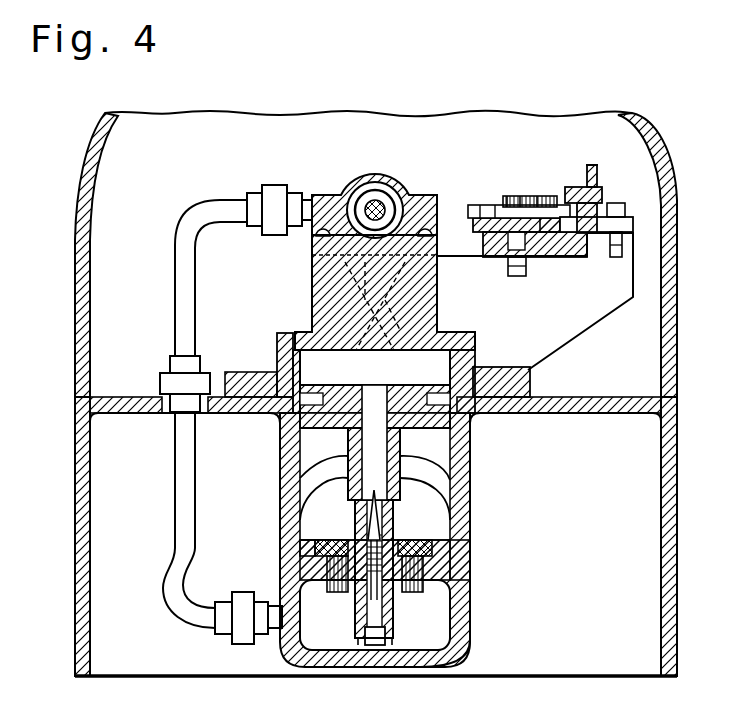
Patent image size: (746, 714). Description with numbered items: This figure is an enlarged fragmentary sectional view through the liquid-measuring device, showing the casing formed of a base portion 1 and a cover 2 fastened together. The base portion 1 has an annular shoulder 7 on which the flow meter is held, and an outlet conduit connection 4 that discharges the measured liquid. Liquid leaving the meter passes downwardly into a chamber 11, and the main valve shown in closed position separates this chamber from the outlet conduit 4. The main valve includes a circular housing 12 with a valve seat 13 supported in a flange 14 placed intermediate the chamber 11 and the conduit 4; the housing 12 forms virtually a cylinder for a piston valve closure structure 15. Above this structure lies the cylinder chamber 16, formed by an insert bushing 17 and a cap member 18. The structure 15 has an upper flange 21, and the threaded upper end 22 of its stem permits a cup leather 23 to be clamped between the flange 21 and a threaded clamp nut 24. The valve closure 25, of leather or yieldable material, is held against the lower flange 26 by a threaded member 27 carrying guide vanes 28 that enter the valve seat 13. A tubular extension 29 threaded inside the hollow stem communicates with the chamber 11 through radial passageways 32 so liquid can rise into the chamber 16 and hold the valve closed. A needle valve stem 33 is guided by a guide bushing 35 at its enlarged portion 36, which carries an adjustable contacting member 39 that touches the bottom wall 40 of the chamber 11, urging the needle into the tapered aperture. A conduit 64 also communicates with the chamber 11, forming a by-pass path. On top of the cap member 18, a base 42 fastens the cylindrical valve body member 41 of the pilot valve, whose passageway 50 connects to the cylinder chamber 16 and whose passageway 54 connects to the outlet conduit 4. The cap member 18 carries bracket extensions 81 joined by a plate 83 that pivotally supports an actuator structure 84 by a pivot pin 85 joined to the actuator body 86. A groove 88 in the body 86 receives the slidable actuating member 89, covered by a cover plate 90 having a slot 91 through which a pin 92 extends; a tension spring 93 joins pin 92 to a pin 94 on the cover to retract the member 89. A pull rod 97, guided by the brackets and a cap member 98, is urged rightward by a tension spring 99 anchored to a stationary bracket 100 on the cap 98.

The base portion 1 is at (680, 478).
The cover 2 is at (680, 318).
The outlet conduit connection 4 is at (430, 500).
The annular shoulder 7 is at (575, 417).
The chamber 11 is at (434, 636).
The circular housing 12 is at (472, 482).
The valve seat 13 is at (455, 540).
The flange 14 is at (450, 570).
The piston valve closure structure 15 is at (403, 459).
The cylinder chamber 16 is at (426, 378).
The insert bushing 17 is at (295, 440).
The cap member 18 is at (278, 332).
The upper flange 21 is at (296, 432).
The threaded upper end of stem 22 is at (350, 387).
The cup leather 23 is at (425, 383).
The threaded clamp nut 24 is at (453, 363).
The valve closure 25 is at (307, 537).
The lower flange 26 is at (312, 527).
The threaded member 27 is at (307, 555).
The guide vanes 28 is at (333, 587).
The tubular extension 29 is at (293, 493).
The radial passageways 32 is at (393, 597).
The needle valve stem 33 is at (373, 498).
The guide bushing 35 is at (366, 635).
The enlarged portion of needle valve stem 36 is at (367, 643).
The adjustable contacting member 39 is at (382, 647).
The bottom wall 40 is at (428, 660).
The valve body member 41 is at (388, 173).
The base 42 is at (442, 240).
The passageway 50 is at (318, 272).
The passageway 54 is at (437, 288).
The conduit 64 is at (180, 295).
The bracket extension 81 is at (588, 328).
The plate 83 is at (550, 256).
The actuator structure 84 is at (524, 222).
The pivot pin 85 is at (517, 255).
The actuator body 86 is at (540, 258).
The groove 88 is at (474, 216).
The actuating member 89 is at (498, 218).
The cover plate 90 is at (483, 203).
The slot 91 is at (495, 206).
The pin 92 is at (507, 197).
The tension spring 93 is at (519, 197).
The pin 94 is at (537, 197).
The pull rod 97 is at (604, 210).
The cap member 98 is at (567, 192).
The tension spring 99 is at (598, 182).
The stationary bracket 100 is at (589, 165).